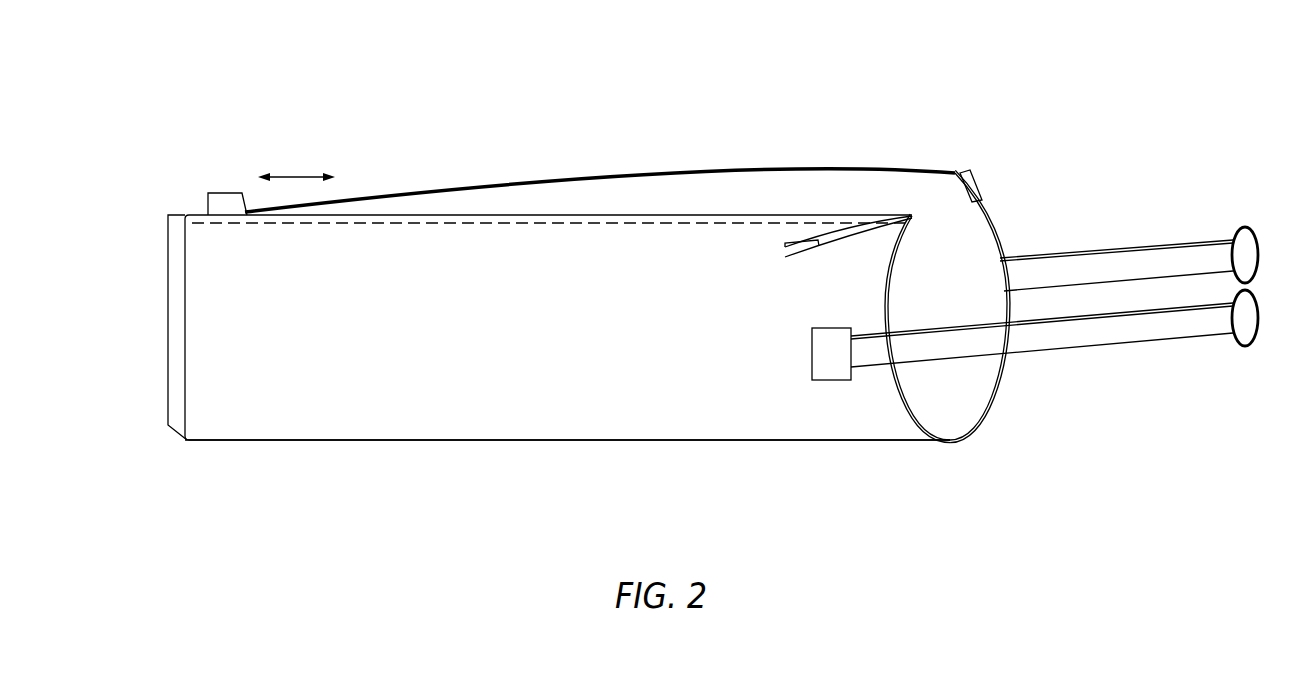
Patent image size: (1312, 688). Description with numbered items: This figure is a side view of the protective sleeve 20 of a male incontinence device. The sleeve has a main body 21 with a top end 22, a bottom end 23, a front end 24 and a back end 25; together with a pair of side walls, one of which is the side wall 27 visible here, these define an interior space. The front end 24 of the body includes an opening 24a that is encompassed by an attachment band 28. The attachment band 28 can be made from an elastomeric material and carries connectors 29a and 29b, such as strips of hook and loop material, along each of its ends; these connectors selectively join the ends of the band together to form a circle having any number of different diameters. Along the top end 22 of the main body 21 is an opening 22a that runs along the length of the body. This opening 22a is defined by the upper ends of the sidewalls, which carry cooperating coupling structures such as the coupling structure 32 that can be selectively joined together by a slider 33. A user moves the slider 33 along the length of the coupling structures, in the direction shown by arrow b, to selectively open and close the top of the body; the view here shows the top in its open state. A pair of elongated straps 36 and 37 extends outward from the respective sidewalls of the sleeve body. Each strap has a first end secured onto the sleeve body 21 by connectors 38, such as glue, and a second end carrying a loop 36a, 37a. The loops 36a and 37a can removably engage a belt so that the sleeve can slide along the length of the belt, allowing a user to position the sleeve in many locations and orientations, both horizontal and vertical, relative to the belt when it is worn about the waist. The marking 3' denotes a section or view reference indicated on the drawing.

The protective sleeve 20 is at (104, 98).
The main body 21 is at (117, 266).
The top end 22 is at (413, 172).
The opening 22a is at (668, 193).
The bottom end 23 is at (560, 440).
The front end 24 is at (963, 257).
The opening 24a is at (982, 389).
The back end 25 is at (185, 325).
The side wall 27 is at (520, 341).
The attachment band 28 is at (905, 410).
The connector 29a is at (803, 243).
The connector 29b is at (970, 180).
The coupling structure 32 is at (503, 182).
The slider 33 is at (225, 202).
The elongated strap 36 is at (1153, 263).
The loop 36a is at (1247, 227).
The elongated strap 37 is at (1136, 335).
The loop 37a is at (1245, 348).
The connectors 38 is at (828, 357).
The section line 3' is at (644, 271).
The arrow b is at (296, 164).